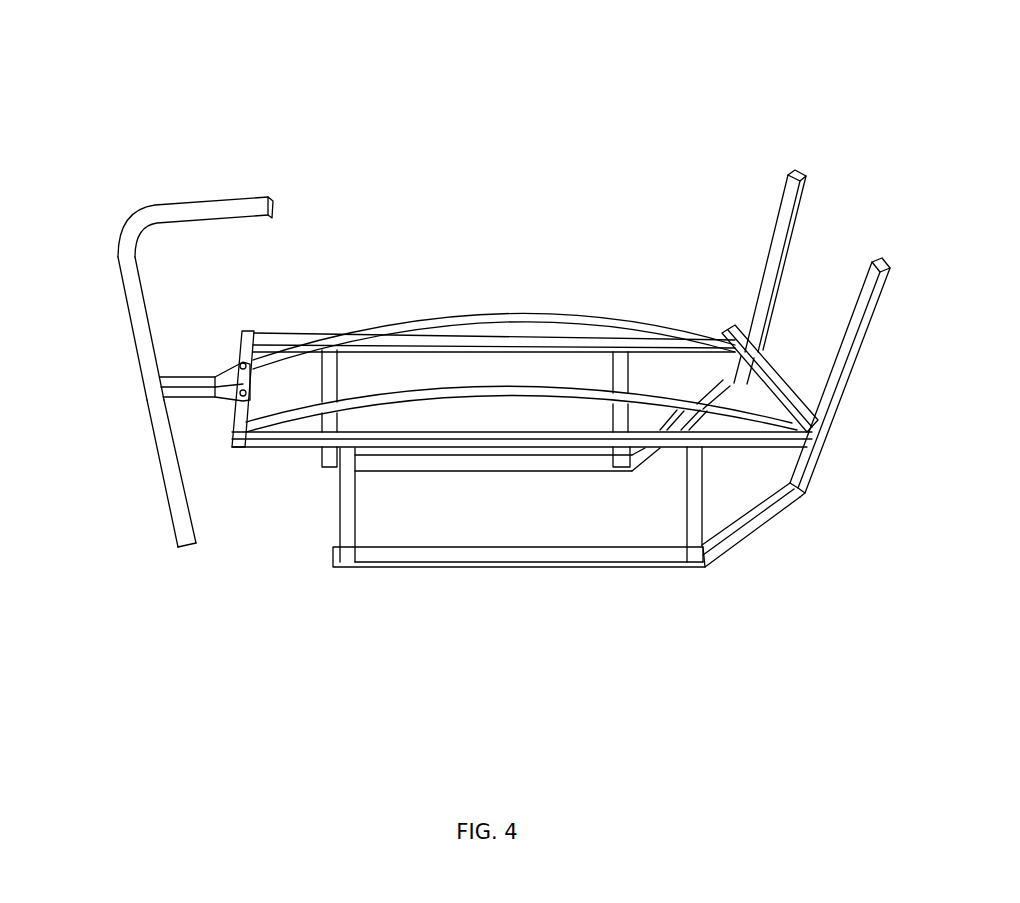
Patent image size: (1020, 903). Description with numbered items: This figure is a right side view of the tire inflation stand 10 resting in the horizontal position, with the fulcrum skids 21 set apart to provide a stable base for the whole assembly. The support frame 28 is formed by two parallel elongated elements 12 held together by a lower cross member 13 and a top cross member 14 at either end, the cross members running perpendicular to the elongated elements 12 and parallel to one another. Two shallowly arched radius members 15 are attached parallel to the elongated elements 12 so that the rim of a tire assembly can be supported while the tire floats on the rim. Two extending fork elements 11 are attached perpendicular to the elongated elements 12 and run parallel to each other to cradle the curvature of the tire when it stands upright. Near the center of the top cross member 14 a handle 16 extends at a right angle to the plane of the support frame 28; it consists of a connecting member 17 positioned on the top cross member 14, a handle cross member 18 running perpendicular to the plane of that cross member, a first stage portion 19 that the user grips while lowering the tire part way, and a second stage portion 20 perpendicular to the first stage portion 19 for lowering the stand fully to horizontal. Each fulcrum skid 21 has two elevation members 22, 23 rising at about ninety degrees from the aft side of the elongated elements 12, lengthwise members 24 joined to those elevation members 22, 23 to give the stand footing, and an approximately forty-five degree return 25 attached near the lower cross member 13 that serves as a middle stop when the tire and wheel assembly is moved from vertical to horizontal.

The tire inflation stand 10 is at (384, 108).
The extending fork elements 11 is at (880, 262).
The elongated elements 12 is at (412, 432).
The lower cross member 13 is at (733, 327).
The top cross member 14 is at (243, 353).
The shallowly arched radius members 15 is at (540, 395).
The handle 16 is at (143, 332).
The connecting member 17 is at (235, 380).
The handle cross member 18 is at (180, 380).
The first stage portion 19 is at (142, 383).
The second stage portion 20 is at (222, 196).
The fulcrum skids 21 is at (525, 565).
The elevation member 22 is at (330, 393).
The elevation member 23 is at (623, 458).
The lengthwise members 24 is at (440, 460).
The return 25 is at (720, 392).
The support frame 28 is at (658, 578).